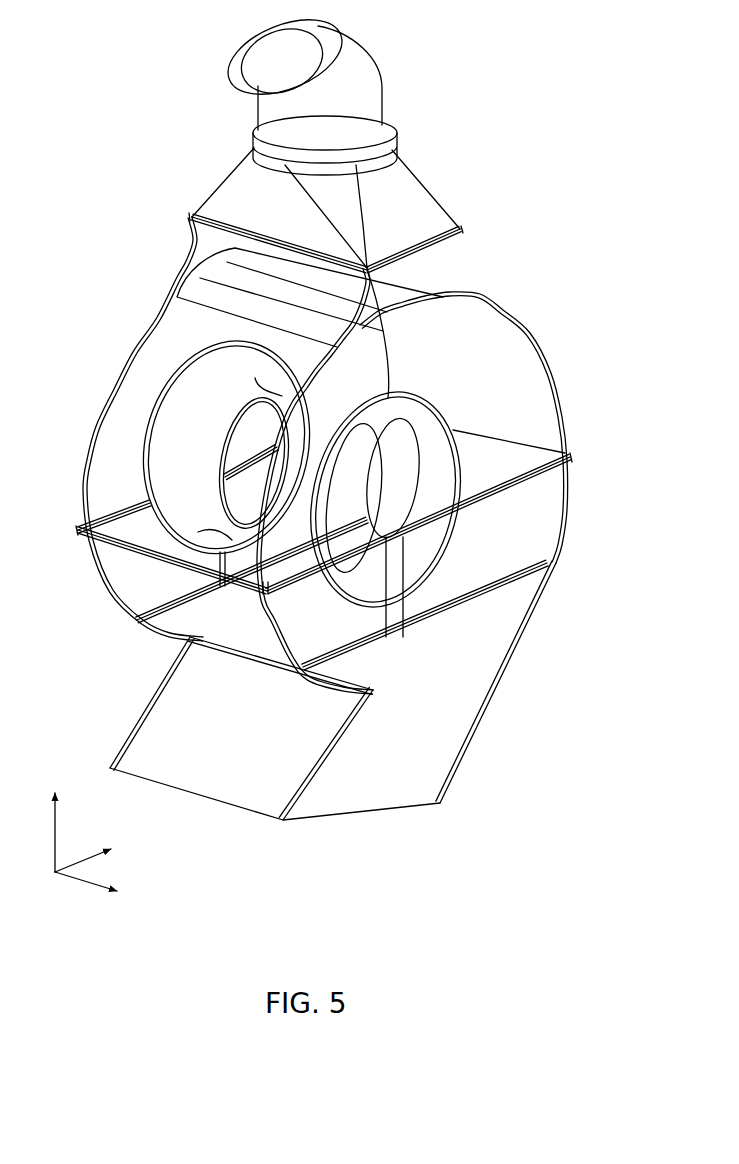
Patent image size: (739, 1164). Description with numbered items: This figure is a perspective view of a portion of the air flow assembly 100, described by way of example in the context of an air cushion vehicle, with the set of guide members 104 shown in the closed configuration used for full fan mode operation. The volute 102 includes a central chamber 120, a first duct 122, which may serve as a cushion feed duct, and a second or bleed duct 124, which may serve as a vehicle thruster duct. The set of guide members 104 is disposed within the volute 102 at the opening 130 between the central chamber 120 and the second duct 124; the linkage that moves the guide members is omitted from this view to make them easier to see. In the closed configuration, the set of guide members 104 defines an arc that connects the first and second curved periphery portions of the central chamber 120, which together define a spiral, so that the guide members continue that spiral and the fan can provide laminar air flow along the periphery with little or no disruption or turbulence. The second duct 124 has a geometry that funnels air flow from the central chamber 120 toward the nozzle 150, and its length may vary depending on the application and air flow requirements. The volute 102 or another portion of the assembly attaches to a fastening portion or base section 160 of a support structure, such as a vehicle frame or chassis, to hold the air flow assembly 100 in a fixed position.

The air flow assembly 100 is at (523, 30).
The volute 102 is at (84, 273).
The set of guide members 104 is at (202, 286).
The central chamber 120 is at (564, 392).
The first duct 122 is at (489, 707).
The second duct 124 is at (459, 270).
The opening 130 is at (401, 316).
The nozzle 150 is at (384, 93).
The fastening portion 160 is at (567, 468).